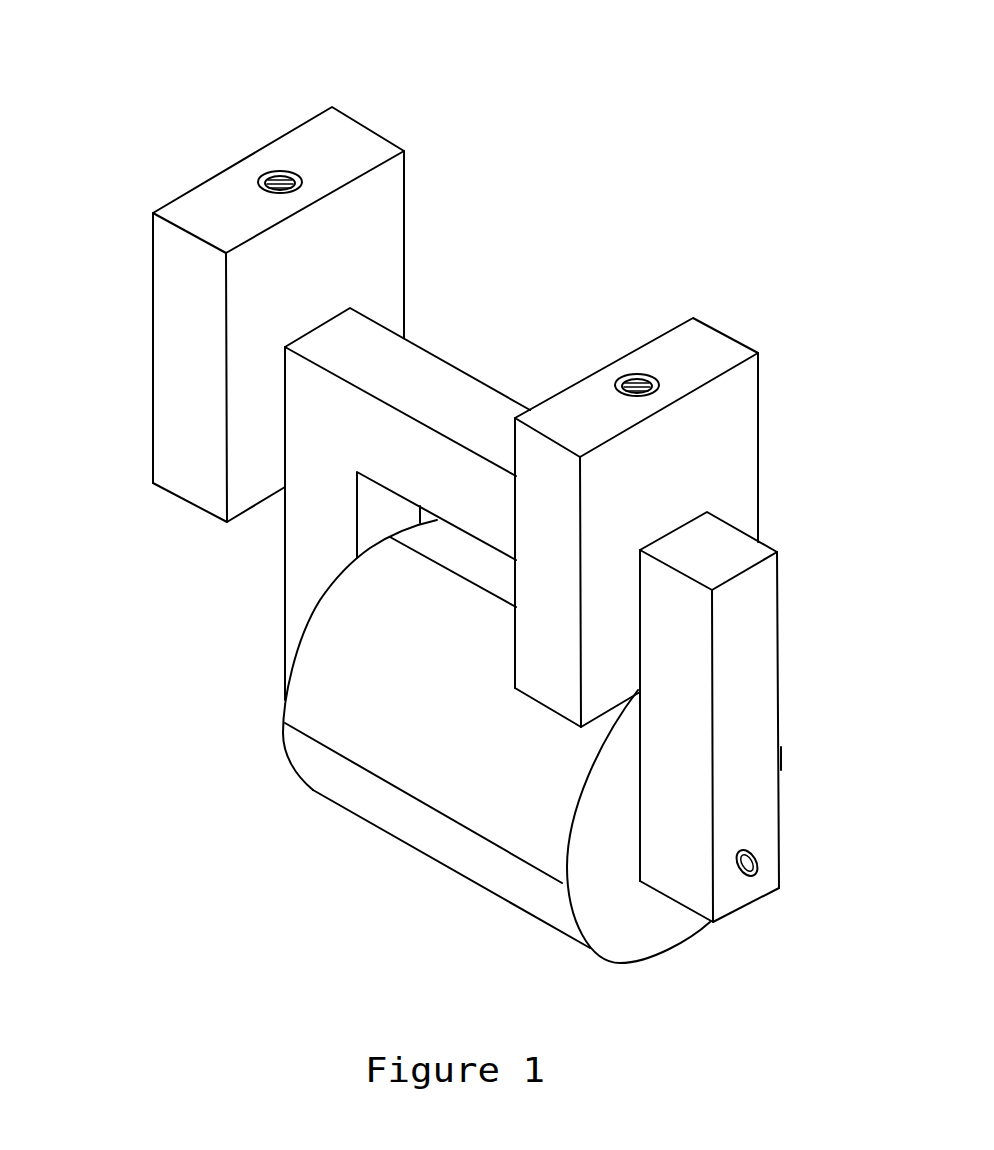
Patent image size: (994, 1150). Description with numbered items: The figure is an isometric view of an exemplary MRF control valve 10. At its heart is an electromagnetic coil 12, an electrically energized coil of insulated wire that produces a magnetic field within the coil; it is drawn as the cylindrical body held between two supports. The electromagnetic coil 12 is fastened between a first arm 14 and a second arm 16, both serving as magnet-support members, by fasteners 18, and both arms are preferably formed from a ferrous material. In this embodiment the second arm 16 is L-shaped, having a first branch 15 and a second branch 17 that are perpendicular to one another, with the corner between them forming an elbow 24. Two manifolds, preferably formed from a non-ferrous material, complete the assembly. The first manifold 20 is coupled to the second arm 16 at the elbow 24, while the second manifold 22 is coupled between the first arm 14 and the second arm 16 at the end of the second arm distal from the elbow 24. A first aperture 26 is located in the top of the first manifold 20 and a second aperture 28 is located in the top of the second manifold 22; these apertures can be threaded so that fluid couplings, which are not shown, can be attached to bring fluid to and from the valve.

The MRF control valve 10 is at (537, 80).
The electromagnetic coil 12 is at (347, 688).
The first arm 14 is at (750, 670).
The first branch 15 is at (297, 557).
The second arm 16 is at (420, 370).
The second branch 17 is at (472, 405).
The fasteners 18 is at (757, 866).
The first manifold 20 is at (188, 317).
The second manifold 22 is at (700, 468).
The elbow 24 is at (302, 395).
The first aperture 26 is at (265, 170).
The second aperture 28 is at (652, 375).